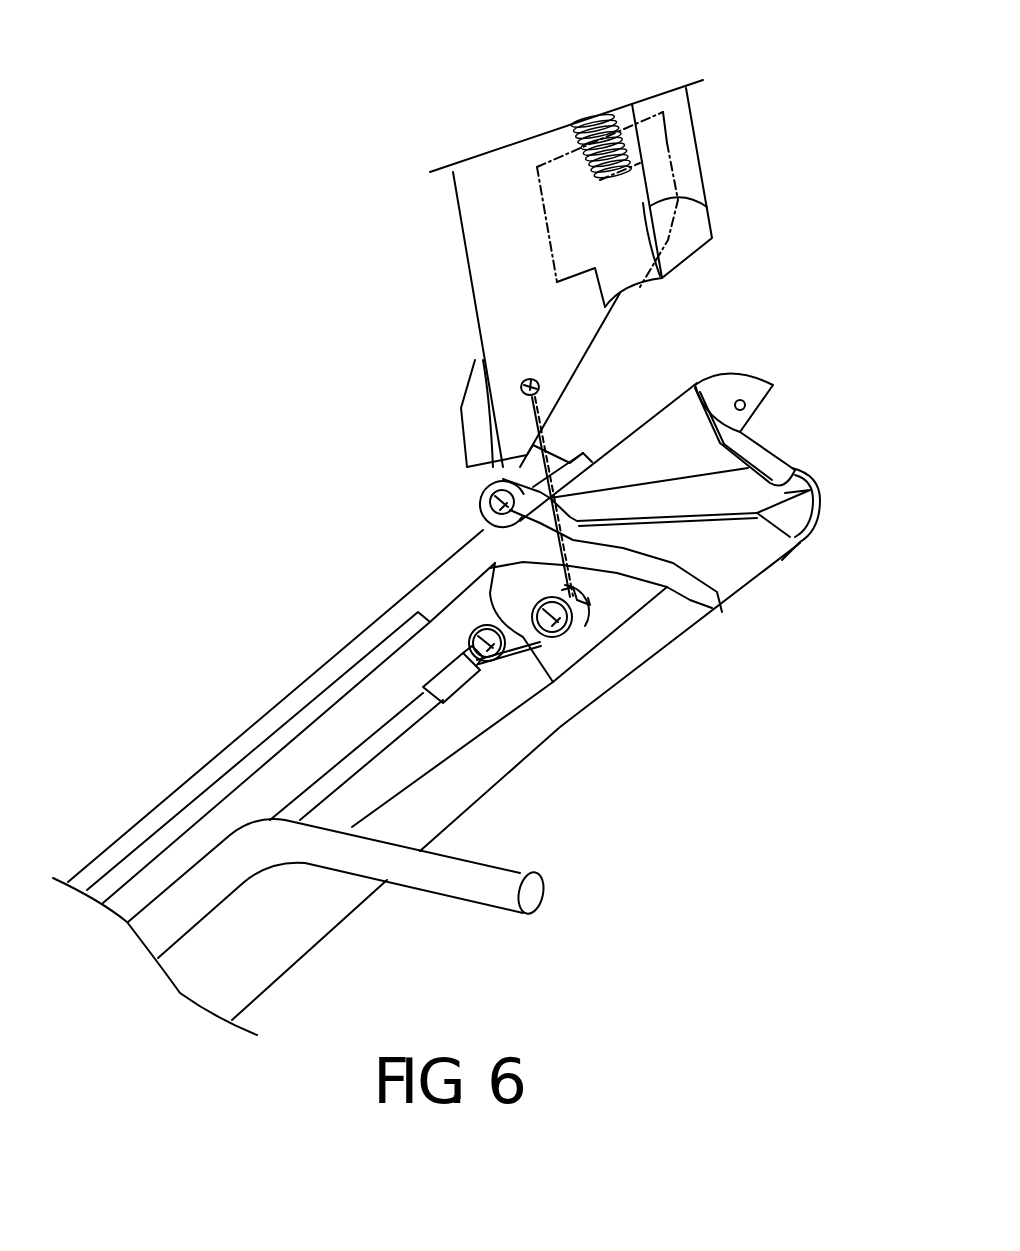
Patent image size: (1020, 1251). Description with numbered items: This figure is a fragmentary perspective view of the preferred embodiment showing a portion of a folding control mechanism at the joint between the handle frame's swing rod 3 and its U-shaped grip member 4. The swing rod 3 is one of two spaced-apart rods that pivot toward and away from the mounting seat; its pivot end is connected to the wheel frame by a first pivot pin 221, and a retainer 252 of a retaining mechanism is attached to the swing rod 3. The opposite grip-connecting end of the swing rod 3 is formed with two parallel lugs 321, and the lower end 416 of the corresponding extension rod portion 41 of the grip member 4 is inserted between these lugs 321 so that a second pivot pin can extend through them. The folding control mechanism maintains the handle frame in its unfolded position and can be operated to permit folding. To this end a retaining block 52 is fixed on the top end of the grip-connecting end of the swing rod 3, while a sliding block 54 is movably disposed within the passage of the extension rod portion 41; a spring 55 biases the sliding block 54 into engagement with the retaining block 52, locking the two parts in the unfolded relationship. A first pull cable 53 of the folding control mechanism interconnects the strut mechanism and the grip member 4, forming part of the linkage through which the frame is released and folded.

The swing rod 3 is at (650, 664).
The grip member 4 is at (516, 130).
The extension rod portion 41 is at (699, 112).
The retaining block 52 is at (742, 382).
The first pull cable 53 is at (540, 675).
The sliding block 54 is at (713, 212).
The spring 55 is at (590, 123).
The first pivot pin 221 is at (733, 592).
The retainer 252 is at (572, 833).
The lug 321 is at (482, 498).
The lower end 416 is at (463, 397).